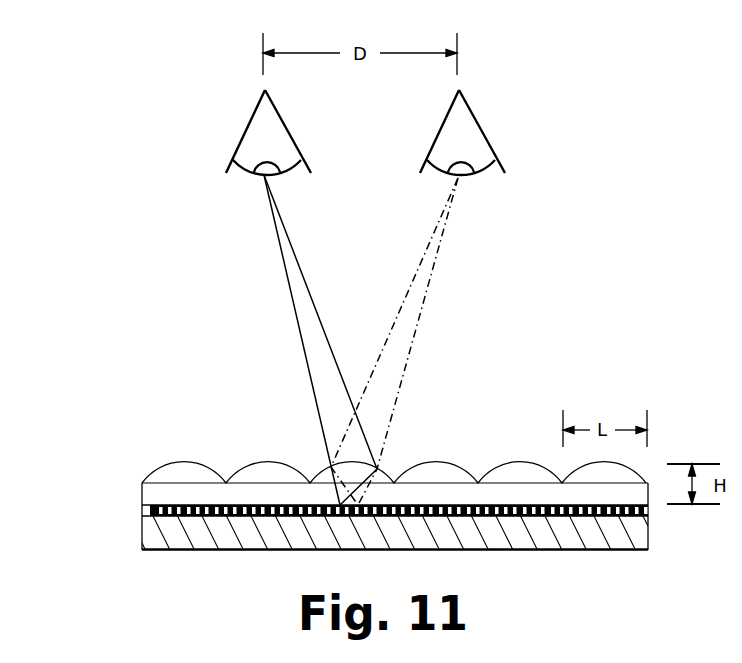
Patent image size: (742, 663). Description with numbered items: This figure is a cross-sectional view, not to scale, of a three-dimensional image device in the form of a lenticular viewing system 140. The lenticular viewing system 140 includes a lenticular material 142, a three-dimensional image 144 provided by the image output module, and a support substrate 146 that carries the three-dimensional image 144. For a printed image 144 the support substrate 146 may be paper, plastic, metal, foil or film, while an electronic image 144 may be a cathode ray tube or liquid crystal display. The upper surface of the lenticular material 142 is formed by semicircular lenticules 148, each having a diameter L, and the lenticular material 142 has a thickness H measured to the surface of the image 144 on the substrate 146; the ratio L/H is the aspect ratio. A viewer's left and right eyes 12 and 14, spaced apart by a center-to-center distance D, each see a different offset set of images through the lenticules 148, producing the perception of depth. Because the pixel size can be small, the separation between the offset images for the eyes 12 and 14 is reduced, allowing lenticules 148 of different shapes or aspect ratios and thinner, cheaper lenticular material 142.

The left eye 12 is at (253, 133).
The right eye 14 is at (470, 142).
The lenticular viewing system 140 is at (155, 420).
The lenticular material 142 is at (157, 493).
The three-dimensional image 144 is at (150, 510).
The support substrate 146 is at (206, 536).
The lenticule 148 is at (277, 475).